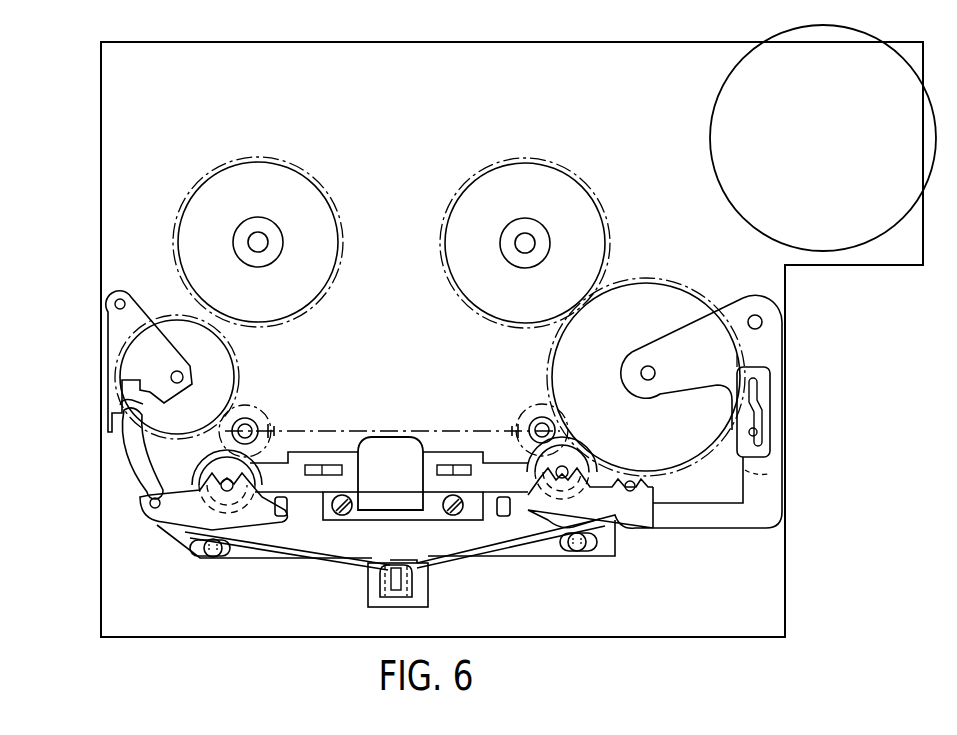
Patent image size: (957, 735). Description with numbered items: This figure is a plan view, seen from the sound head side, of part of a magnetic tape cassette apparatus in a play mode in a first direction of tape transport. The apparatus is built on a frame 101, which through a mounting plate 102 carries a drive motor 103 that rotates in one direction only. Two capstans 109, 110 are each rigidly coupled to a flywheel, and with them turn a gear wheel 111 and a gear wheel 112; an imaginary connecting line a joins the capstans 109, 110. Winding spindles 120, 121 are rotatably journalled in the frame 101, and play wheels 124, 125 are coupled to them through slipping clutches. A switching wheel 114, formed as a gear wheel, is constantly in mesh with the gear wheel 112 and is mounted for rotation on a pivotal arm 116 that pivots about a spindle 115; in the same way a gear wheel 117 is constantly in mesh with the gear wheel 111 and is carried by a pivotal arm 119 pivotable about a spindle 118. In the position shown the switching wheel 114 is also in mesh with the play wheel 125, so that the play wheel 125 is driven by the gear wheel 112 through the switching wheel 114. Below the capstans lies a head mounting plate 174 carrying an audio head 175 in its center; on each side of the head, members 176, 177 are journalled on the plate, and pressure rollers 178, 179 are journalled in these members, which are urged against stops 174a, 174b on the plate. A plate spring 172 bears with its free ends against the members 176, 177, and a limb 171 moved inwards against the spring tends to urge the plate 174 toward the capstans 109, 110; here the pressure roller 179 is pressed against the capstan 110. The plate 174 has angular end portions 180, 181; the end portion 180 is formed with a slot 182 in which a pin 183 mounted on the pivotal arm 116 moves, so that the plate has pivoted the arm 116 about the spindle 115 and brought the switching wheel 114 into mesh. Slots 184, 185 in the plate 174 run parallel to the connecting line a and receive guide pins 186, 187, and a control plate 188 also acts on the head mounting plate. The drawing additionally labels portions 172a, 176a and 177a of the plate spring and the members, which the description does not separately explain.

The frame 101 is at (113, 133).
The mounting plate 102 is at (884, 266).
The drive motor 103 is at (712, 80).
The capstan 109 is at (250, 419).
The capstan 110 is at (540, 420).
The gear wheel 111 is at (273, 429).
The gear wheel 112 is at (517, 424).
The switching wheel 114 is at (655, 278).
The spindle 115 is at (763, 325).
The pivotal arm 116 is at (678, 350).
The gear wheel 117 is at (130, 387).
The spindle 118 is at (113, 303).
The pivotal arm 119 is at (136, 352).
The winding spindle 120 is at (256, 242).
The winding spindle 121 is at (522, 241).
The play wheel 124 is at (292, 163).
The play wheel 125 is at (521, 161).
The limb 171 is at (380, 585).
The plate spring 172 is at (500, 553).
The lever arm portion 172a is at (428, 585).
The head mounting plate 174 is at (258, 560).
The stop 174a is at (288, 507).
The stop 174b is at (497, 507).
The audio head 175 is at (397, 450).
The member 176 is at (160, 535).
The pivot 176a is at (150, 505).
The member 177 is at (635, 531).
The hook portion 177a is at (651, 487).
The pressure roller 178 is at (194, 486).
The pressure roller 179 is at (588, 467).
The angular end portion 180 is at (768, 478).
The angular end portion 181 is at (148, 448).
The slot 182 is at (766, 392).
The pin 183 is at (758, 432).
The slot 184 is at (200, 556).
The slot 185 is at (591, 553).
The guide pin 186 is at (222, 557).
The guide pin 187 is at (575, 553).
The control plate 188 is at (457, 450).
The connecting line a is at (343, 428).